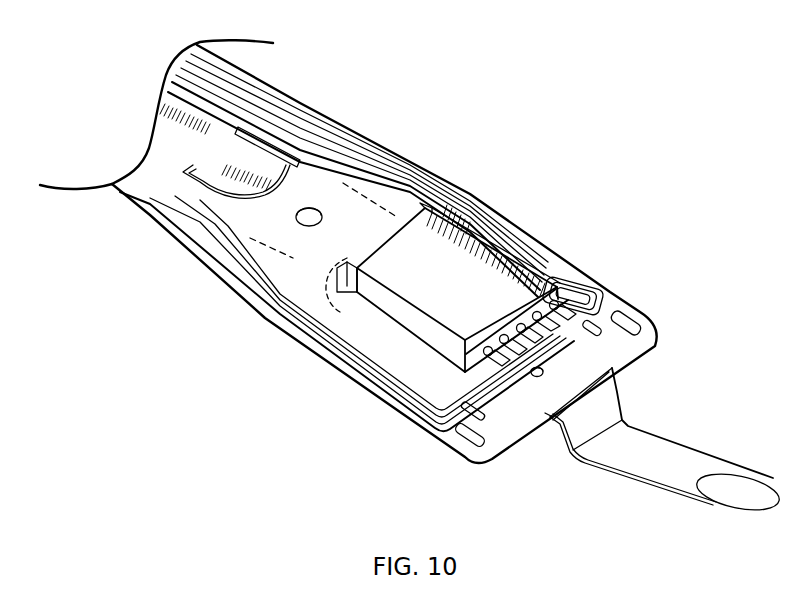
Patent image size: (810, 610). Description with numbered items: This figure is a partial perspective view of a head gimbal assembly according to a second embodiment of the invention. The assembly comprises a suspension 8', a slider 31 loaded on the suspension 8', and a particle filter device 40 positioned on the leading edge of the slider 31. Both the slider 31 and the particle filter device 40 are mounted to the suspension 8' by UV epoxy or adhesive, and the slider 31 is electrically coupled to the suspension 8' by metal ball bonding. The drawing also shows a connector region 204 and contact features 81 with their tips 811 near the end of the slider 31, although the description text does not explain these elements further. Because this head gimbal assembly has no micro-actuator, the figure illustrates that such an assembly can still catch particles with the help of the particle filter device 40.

The suspension 8' is at (407, 278).
The slider 31 is at (468, 277).
The particle filter device 40 is at (400, 227).
The connector 204 is at (547, 290).
The contact terminals 81 is at (612, 352).
The contact tips 811 is at (540, 318).